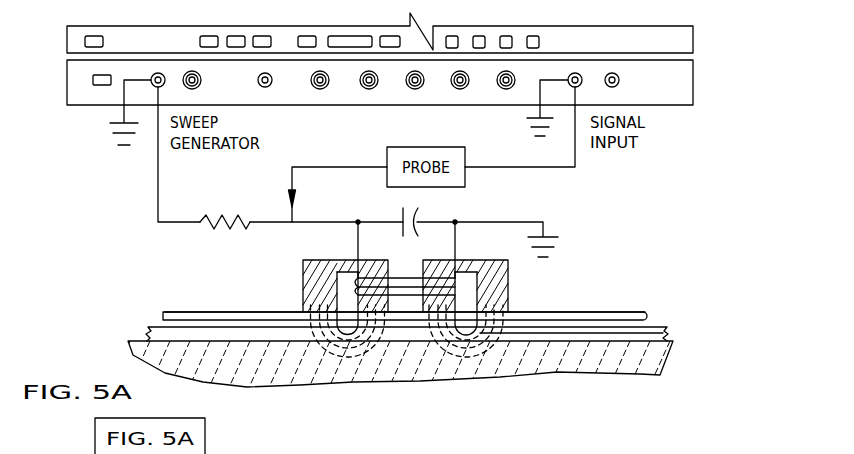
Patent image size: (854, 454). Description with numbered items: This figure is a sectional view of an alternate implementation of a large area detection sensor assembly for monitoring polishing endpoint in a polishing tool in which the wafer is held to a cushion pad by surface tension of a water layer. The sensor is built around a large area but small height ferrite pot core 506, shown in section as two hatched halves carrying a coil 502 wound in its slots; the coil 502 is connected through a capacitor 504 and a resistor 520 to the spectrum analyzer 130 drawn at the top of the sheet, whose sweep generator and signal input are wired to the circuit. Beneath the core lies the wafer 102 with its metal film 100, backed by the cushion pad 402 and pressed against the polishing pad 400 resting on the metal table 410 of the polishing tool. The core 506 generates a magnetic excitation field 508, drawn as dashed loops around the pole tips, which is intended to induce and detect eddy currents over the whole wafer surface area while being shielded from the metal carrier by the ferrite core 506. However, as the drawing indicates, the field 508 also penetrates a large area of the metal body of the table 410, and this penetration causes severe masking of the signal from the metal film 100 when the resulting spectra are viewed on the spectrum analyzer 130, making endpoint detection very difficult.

The spectrum analyzer 130 is at (695, 38).
The resistor 520 is at (214, 212).
The capacitor 504 is at (420, 216).
The coil 502 is at (400, 278).
The ferrite pot core 506 is at (303, 296).
The wafer 102 is at (164, 325).
The metal film 100 is at (407, 299).
The cushion pad 402 is at (610, 312).
The polishing pad 400 is at (647, 333).
The metal table 410 is at (432, 376).
The magnetic excitation field 508 is at (467, 365).